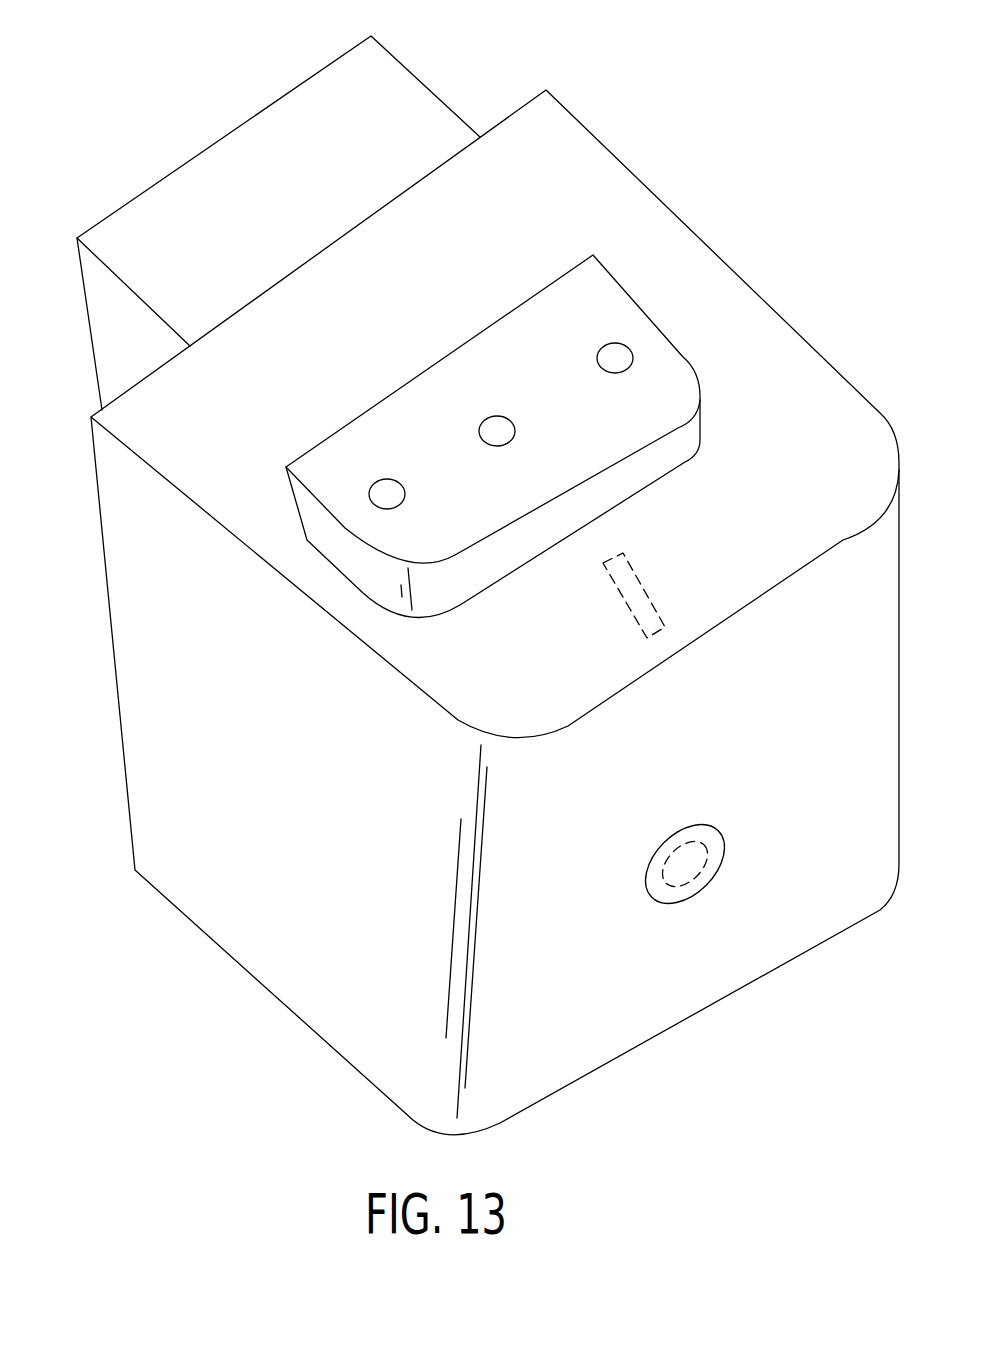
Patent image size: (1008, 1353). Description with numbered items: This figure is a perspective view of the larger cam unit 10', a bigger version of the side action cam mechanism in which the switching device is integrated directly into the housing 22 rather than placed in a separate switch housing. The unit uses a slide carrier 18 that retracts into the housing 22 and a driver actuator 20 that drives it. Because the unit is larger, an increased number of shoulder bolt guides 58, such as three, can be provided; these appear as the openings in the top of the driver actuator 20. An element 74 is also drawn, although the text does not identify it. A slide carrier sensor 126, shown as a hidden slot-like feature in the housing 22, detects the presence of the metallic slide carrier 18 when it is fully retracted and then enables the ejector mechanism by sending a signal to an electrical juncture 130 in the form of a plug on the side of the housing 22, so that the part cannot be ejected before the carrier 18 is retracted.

The larger cam unit 10' is at (474, 580).
The slide carrier 18 is at (70, 317).
The driver actuator 20 is at (700, 417).
The housing 22 is at (307, 953).
The shoulder bolt guides 58 is at (613, 350).
The rear panel 74 is at (402, 92).
The slide carrier sensor 126 is at (652, 603).
The electrical juncture 130 is at (720, 849).